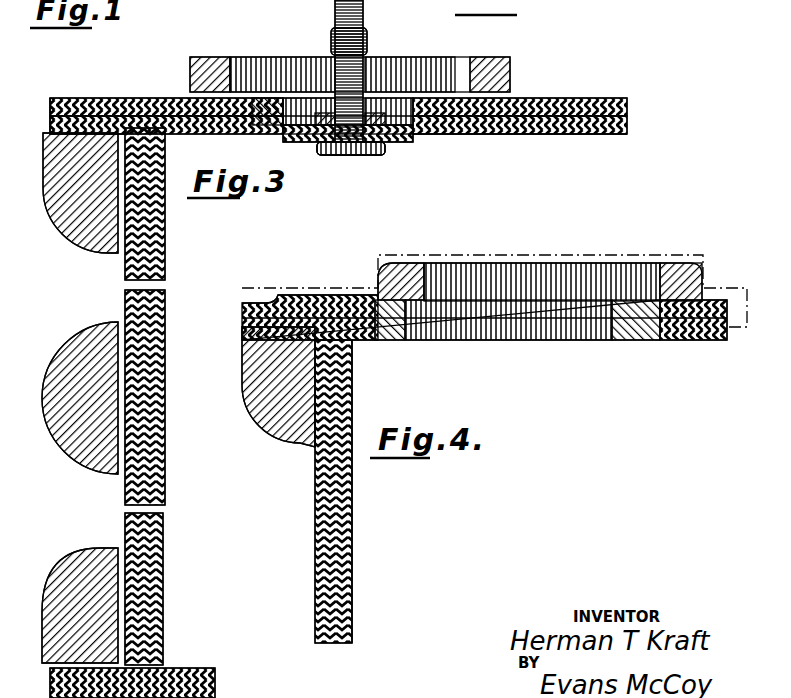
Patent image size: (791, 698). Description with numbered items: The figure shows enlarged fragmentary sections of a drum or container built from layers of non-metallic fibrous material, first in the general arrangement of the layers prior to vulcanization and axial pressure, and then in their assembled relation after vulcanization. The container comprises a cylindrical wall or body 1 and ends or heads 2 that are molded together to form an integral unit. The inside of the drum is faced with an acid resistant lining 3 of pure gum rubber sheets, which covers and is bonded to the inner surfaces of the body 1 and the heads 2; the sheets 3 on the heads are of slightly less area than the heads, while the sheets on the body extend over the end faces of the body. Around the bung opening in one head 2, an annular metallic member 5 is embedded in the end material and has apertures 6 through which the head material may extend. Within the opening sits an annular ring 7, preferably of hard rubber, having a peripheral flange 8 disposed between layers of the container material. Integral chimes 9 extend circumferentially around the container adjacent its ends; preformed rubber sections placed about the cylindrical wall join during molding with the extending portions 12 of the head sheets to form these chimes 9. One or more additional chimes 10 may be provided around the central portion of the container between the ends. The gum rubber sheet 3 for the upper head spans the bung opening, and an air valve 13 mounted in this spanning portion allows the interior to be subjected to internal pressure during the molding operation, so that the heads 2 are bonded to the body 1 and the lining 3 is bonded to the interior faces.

In FIG. 3, the cylindrical wall or body 1 is at (125, 490).
In FIG. 4, the cylindrical wall or body 1 is at (315, 523).
In FIG. 3, the ends or heads 2 is at (606, 100).
In FIG. 3, the acid resistant lining 3 is at (165, 408).
In FIG. 4, the acid resistant lining 3 is at (352, 548).
In FIG. 3, the annular metallic member 5 is at (535, 100).
In FIG. 3, the apertures 6 is at (502, 100).
In FIG. 3, the annular ring 7 is at (415, 118).
In FIG. 4, the annular ring 7 is at (610, 340).
In FIG. 3, the peripheral flange 8 is at (484, 135).
In FIG. 3, the chimes 9 is at (52, 228).
In FIG. 4, the chimes 9 is at (278, 437).
In FIG. 3, the additional chimes 10 is at (74, 340).
In FIG. 3, the extending portions 12 is at (50, 128).
In FIG. 3, the air valve 13 is at (333, 36).